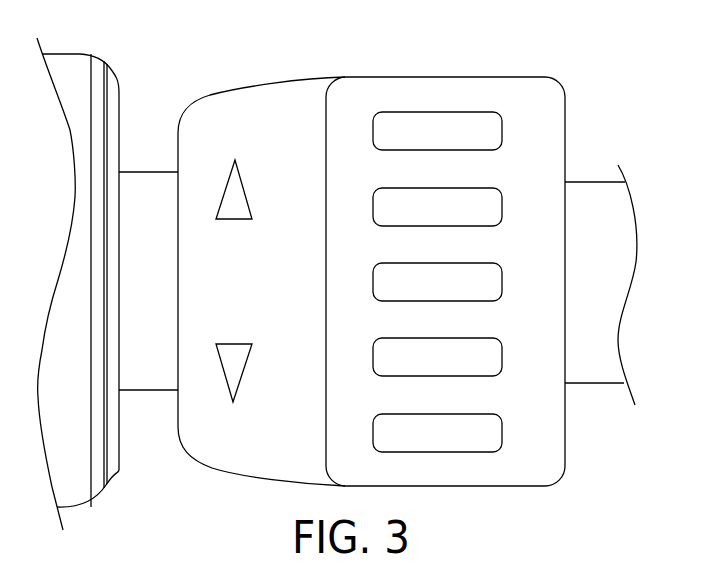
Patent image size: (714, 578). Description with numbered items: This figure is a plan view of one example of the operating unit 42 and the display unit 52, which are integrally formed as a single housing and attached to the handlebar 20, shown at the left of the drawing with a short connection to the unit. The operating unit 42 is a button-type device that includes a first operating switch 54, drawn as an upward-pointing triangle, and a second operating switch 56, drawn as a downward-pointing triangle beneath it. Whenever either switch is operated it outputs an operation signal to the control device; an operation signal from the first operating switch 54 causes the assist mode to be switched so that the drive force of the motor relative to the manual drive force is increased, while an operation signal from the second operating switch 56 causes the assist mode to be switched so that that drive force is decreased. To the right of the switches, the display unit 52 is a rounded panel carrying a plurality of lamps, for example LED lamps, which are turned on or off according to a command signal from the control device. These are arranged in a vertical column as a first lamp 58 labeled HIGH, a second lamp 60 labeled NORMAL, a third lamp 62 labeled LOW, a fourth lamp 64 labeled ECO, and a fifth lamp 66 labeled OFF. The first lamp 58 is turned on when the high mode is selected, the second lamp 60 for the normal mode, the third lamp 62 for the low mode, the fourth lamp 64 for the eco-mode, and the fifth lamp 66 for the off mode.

The handlebar 20 is at (98, 63).
The operating unit 42 is at (291, 77).
The display unit 52 is at (437, 77).
The first operating switch 54 is at (244, 192).
The second operating switch 56 is at (243, 373).
The first lamp 58 is at (503, 121).
The second lamp 60 is at (503, 197).
The third lamp 62 is at (503, 272).
The fourth lamp 64 is at (503, 347).
The fifth lamp 66 is at (503, 423).